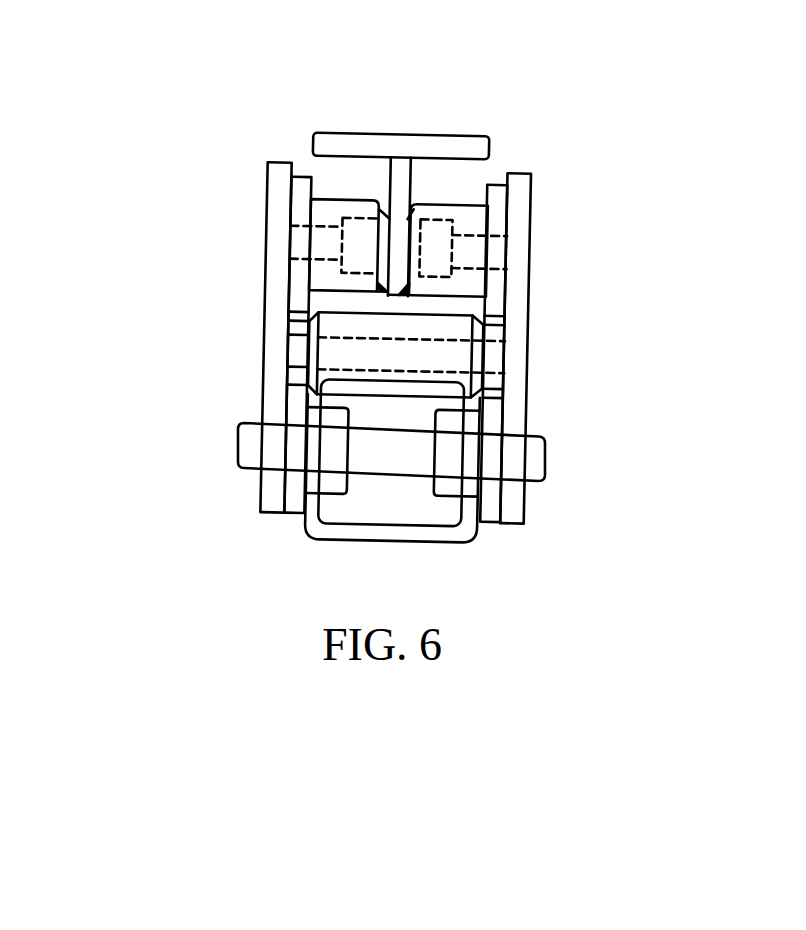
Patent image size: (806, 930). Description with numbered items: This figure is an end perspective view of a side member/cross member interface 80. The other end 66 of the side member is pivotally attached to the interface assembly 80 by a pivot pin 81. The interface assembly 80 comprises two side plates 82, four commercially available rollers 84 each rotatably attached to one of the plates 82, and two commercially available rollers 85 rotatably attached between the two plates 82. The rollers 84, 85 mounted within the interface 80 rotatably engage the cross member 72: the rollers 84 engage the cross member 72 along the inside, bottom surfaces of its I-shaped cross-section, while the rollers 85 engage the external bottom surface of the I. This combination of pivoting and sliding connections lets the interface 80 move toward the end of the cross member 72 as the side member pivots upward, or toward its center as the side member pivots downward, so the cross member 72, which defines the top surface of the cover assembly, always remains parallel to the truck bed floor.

The other end of the side member 66 is at (470, 535).
The cross member 72 is at (418, 145).
The side member/cross member interface 80 is at (471, 336).
The pivot pin 81 is at (545, 465).
The side plates 82 is at (518, 370).
The rollers 84 is at (467, 222).
The rollers 85 is at (375, 330).